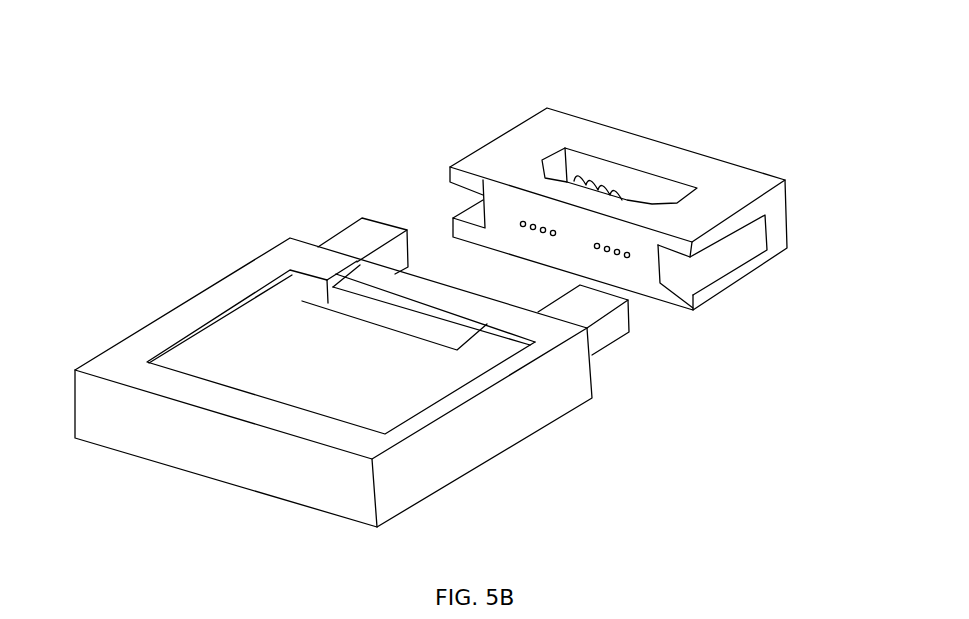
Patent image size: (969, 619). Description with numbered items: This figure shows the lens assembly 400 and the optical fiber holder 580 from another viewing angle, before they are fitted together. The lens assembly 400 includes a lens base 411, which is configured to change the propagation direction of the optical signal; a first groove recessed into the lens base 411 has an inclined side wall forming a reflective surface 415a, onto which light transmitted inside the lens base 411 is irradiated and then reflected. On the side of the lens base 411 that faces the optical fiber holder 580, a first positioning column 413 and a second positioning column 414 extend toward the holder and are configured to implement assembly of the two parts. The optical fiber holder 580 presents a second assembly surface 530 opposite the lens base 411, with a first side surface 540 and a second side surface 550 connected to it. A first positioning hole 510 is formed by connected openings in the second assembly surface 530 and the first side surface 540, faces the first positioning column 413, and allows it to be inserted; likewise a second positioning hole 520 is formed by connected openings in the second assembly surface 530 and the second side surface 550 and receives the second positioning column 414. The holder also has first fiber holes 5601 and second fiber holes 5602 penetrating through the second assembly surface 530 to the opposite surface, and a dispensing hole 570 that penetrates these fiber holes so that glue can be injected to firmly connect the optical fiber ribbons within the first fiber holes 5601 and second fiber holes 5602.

The lens assembly 400 is at (124, 279).
The lens base 411 is at (262, 373).
The first positioning column 413 is at (357, 241).
The second positioning column 414 is at (587, 303).
The reflective surface 415a is at (430, 325).
The first positioning hole 510 is at (458, 203).
The second positioning hole 520 is at (718, 263).
The second assembly surface 530 is at (505, 208).
The first side surface 540 is at (527, 113).
The second side surface 550 is at (777, 235).
The dispensing hole 570 is at (645, 195).
The optical fiber holder 580 is at (595, 133).
The first fiber holes 5601 is at (616, 252).
The second fiber holes 5602 is at (521, 225).